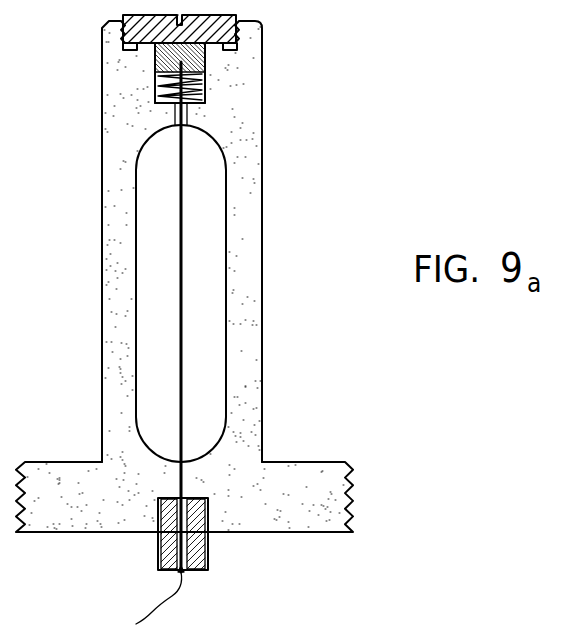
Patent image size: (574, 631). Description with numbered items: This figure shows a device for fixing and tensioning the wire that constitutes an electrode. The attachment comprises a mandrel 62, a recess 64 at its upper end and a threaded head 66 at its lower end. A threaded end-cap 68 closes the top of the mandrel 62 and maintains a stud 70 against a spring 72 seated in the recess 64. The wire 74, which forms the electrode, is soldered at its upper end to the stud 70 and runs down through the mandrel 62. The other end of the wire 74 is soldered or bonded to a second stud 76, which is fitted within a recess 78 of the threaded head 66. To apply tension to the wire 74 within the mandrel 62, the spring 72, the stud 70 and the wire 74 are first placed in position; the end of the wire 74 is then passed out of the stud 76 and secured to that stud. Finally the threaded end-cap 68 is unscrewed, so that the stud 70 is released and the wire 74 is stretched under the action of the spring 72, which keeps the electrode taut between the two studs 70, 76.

The mandrel 62 is at (115, 375).
The recess 64 is at (207, 78).
The threaded head 66 is at (40, 500).
The threaded end-cap 68 is at (135, 16).
The stud 70 is at (153, 66).
The spring 72 is at (207, 103).
The wire 74 is at (182, 303).
The stud 76 is at (200, 543).
The recess 78 is at (170, 522).